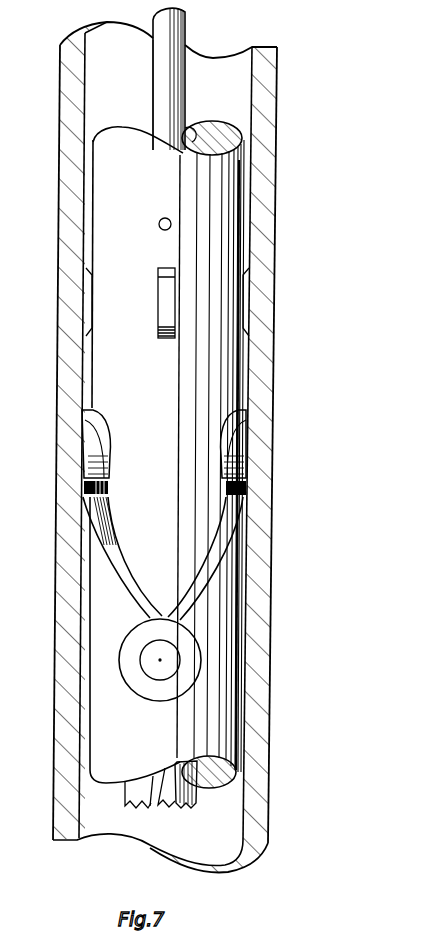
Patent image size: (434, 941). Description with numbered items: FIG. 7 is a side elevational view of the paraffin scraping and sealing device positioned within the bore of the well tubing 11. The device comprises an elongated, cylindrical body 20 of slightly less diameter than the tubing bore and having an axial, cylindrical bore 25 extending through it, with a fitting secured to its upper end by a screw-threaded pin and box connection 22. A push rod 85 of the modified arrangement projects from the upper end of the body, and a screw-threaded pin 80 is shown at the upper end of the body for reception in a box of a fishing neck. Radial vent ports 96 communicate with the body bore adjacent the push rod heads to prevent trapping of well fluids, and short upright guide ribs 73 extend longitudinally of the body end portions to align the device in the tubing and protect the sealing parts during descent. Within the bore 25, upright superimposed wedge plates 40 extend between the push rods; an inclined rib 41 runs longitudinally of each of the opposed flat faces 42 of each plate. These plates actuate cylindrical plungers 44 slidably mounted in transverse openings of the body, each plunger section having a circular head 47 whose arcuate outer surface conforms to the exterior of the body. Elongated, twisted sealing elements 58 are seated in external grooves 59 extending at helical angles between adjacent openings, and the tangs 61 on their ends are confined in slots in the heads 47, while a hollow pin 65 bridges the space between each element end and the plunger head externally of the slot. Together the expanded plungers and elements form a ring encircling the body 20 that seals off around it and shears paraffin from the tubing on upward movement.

The tubing 11 is at (277, 90).
The pin 80 is at (187, 20).
The push rod 85 is at (153, 75).
The pin and box connection 22 is at (195, 128).
The body 20 is at (235, 722).
The bore 25 is at (232, 780).
The vent ports 96 is at (158, 220).
The guide ribs 73 is at (158, 301).
The pin 65 is at (88, 493).
The tangs 61 is at (102, 492).
The plungers 44 is at (246, 442).
The grooves 59 is at (116, 546).
The sealing elements 58 is at (125, 578).
The head 47 is at (140, 700).
The flat faces 42 is at (127, 800).
The rib 41 is at (163, 800).
The wedge plates 40 is at (195, 803).